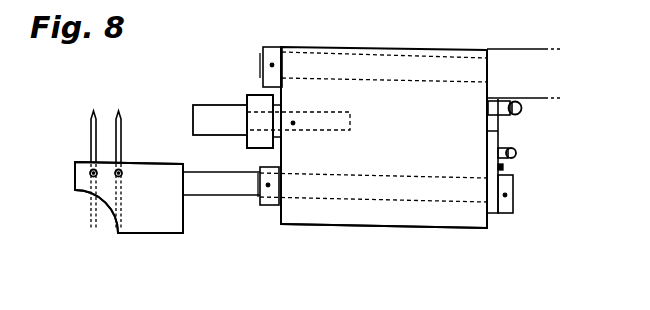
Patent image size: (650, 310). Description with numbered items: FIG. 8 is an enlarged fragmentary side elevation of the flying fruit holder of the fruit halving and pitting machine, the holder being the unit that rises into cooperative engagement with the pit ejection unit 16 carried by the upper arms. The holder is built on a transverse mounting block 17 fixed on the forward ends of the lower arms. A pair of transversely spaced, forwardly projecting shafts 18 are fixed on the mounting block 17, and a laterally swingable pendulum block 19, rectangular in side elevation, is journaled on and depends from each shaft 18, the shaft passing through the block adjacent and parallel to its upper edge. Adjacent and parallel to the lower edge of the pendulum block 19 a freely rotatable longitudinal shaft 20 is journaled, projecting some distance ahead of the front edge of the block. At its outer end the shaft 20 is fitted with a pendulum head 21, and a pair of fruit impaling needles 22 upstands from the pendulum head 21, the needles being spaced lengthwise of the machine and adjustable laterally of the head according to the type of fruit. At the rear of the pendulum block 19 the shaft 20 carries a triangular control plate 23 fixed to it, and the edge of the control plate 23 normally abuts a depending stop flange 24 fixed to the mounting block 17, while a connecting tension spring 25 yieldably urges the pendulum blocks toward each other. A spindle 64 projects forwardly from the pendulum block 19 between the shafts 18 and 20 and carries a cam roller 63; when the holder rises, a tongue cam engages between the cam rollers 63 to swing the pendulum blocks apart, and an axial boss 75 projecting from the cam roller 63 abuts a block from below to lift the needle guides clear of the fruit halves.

The pit ejection unit 16 is at (86, 236).
The transverse mounting block 17 is at (522, 58).
The forwardly projecting shafts 18 is at (373, 44).
The pendulum block 19 is at (432, 218).
The longitudinal shaft 20 is at (238, 193).
The pendulum head 21 is at (163, 220).
The fruit impaling needles 22 is at (116, 142).
The triangular control plate 23 is at (497, 142).
The stop flange 24 is at (488, 124).
The tension spring 25 is at (522, 112).
The cam roller 63 is at (255, 102).
The spindle 64 is at (352, 122).
The axial boss 75 is at (213, 113).